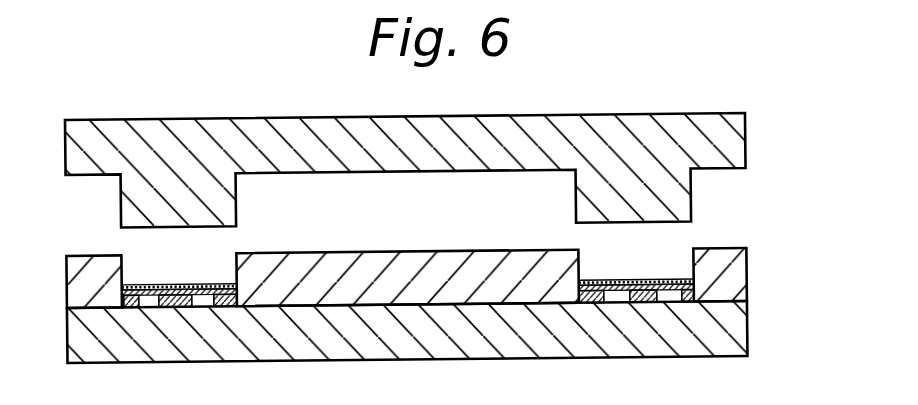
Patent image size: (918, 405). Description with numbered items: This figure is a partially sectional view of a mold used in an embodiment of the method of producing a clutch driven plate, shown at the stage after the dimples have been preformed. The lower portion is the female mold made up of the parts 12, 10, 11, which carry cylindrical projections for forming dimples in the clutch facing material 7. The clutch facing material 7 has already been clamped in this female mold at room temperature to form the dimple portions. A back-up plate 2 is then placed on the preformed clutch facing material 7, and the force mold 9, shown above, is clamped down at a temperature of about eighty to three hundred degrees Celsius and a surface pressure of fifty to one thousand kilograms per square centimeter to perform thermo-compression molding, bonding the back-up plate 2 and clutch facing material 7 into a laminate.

The force mold 9 is at (734, 145).
The female mold part 10 is at (570, 266).
The female mold part 11 is at (735, 262).
The back-up plate 2 is at (685, 286).
The clutch facing material 7 is at (690, 303).
The female mold part 12 is at (655, 346).